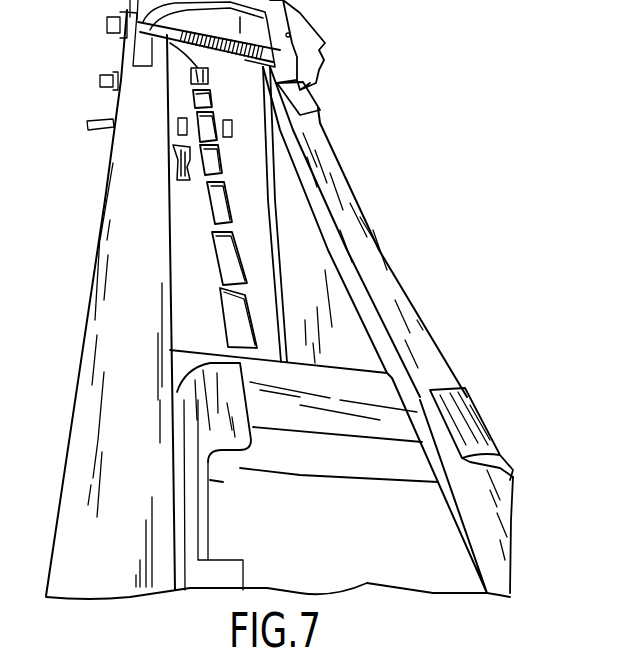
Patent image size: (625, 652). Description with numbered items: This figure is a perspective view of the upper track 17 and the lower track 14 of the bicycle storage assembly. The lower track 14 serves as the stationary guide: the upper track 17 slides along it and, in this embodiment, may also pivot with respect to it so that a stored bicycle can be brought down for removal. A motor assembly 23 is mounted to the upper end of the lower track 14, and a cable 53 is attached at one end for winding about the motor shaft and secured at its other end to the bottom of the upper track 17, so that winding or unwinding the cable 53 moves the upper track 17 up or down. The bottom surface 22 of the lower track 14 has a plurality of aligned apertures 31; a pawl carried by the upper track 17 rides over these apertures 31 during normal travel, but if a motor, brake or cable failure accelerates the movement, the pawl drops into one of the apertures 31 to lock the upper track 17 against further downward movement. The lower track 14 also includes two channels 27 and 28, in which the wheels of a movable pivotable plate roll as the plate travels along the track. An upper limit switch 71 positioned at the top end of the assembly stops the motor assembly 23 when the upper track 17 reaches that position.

The lower track 14 is at (337, 330).
The upper track 17 is at (413, 550).
The bottom surface 22 is at (180, 232).
The motor assembly 23 is at (335, 50).
The channel 27 is at (430, 370).
The channel 28 is at (113, 350).
The aligned apertures 31 is at (227, 197).
The cable 53 is at (290, 243).
The upper limit switch 71 is at (177, 140).